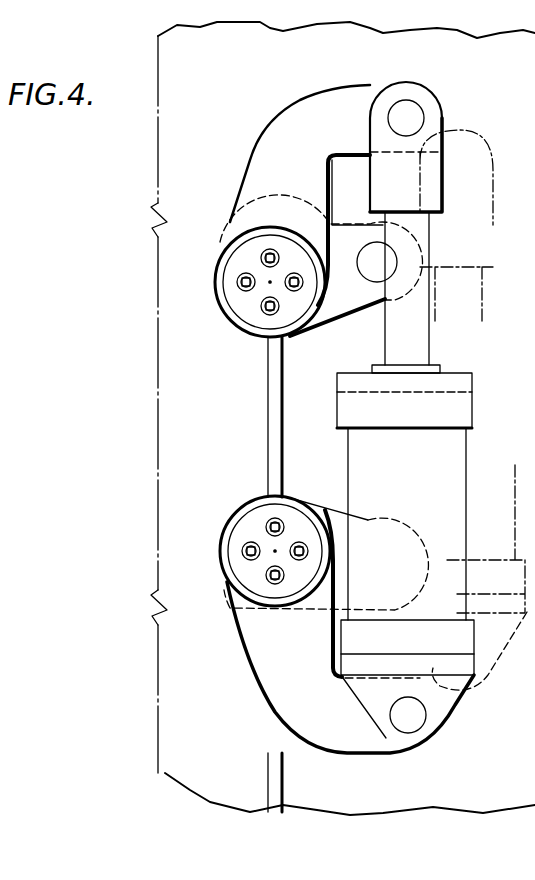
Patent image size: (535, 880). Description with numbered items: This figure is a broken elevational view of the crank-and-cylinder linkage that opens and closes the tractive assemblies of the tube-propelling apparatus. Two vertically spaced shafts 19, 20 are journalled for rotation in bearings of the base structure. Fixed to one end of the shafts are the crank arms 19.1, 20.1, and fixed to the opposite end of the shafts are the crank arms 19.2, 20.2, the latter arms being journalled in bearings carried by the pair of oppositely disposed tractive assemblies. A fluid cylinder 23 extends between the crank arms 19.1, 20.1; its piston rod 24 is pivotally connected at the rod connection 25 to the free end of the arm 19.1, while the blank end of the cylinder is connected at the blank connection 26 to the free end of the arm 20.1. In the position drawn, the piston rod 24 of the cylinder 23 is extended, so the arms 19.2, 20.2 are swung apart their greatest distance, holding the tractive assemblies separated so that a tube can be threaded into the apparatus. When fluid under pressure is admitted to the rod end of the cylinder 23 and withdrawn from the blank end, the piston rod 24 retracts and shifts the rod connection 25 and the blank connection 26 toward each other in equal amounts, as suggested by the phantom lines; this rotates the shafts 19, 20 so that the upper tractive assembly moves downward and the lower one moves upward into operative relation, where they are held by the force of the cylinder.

The shaft 19 is at (248, 310).
The crank arm 19.1 is at (260, 146).
The crank arm 19.2 is at (340, 316).
The shaft 20 is at (242, 527).
The crank arm 20.1 is at (268, 695).
The crank arm 20.2 is at (333, 520).
The fluid cylinder 23 is at (476, 456).
The piston rod 24 is at (420, 345).
The rod connection 25 is at (418, 112).
The blank connection 26 is at (412, 722).